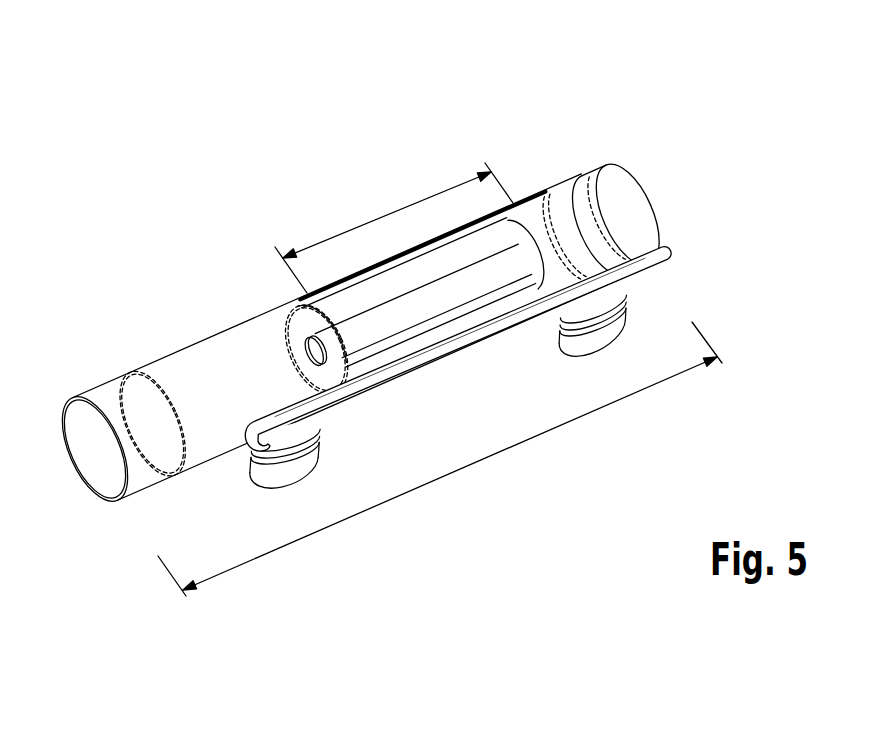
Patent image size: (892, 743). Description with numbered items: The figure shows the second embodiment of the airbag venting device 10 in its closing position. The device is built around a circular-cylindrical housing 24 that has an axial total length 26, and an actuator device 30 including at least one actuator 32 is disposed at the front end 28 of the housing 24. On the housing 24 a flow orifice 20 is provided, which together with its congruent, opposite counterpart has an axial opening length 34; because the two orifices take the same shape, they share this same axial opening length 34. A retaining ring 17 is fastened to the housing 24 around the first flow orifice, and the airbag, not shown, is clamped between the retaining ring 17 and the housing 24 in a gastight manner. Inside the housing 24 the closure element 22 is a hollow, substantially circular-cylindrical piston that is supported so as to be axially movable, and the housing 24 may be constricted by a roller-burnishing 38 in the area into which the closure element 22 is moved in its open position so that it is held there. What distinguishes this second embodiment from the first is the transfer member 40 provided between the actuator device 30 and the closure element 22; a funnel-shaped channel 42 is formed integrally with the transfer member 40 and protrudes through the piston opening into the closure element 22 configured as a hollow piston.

The airbag venting device 10 is at (429, 298).
The retaining ring 17 is at (672, 263).
The flow orifice 20 is at (507, 303).
The closure element 22 is at (373, 331).
The housing 24 is at (124, 377).
The axial total length 26 is at (600, 413).
The front end 28 is at (527, 302).
The actuator device 30 is at (590, 151).
The actuator 32 is at (623, 190).
The axial opening length 34 is at (347, 229).
The roller-burnishing 38 is at (112, 393).
The transfer member 40 is at (553, 198).
The funnel-shaped channel 42 is at (427, 302).